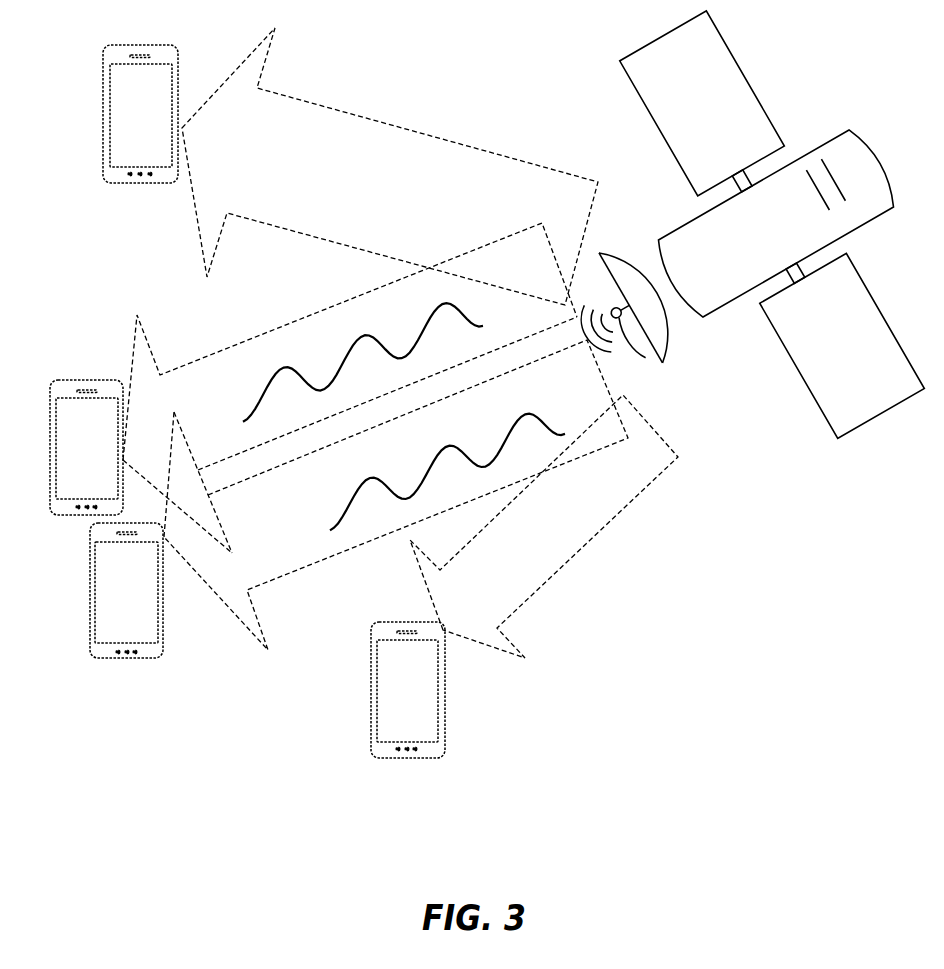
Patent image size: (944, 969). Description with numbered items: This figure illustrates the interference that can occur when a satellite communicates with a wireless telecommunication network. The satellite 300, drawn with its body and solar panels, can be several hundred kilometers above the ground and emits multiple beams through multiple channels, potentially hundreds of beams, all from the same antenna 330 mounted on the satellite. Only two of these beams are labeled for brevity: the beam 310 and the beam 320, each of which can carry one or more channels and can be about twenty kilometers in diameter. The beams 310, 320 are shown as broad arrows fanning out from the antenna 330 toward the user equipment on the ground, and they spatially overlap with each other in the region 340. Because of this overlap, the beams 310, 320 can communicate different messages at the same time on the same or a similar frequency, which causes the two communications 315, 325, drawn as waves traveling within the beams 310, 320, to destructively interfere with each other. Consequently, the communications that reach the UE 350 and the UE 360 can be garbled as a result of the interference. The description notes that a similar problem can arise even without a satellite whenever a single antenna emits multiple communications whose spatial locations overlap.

The satellite 300 is at (880, 164).
The beam 310 is at (137, 315).
The communication 315 is at (311, 349).
The beam 320 is at (268, 650).
The communication 325 is at (522, 416).
The antenna 330 is at (646, 363).
The region 340 is at (243, 455).
The UE 350 is at (77, 378).
The UE 360 is at (90, 637).